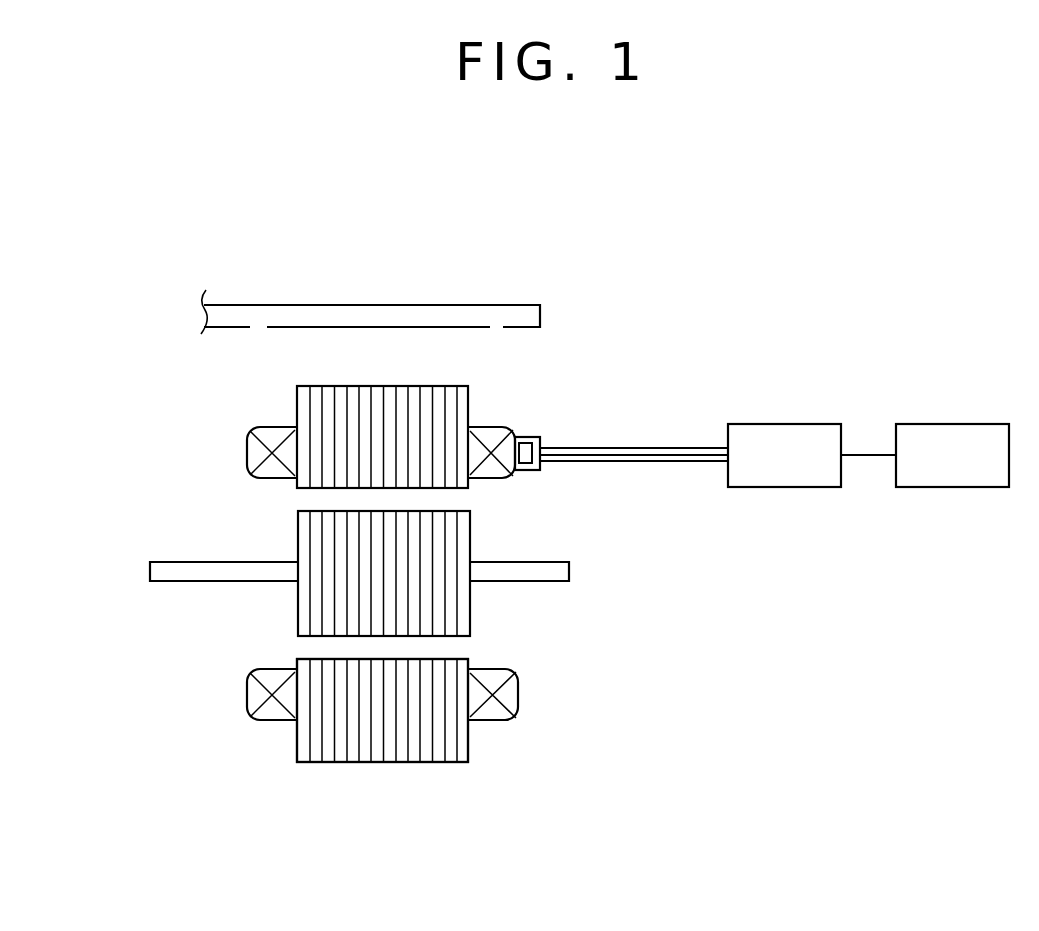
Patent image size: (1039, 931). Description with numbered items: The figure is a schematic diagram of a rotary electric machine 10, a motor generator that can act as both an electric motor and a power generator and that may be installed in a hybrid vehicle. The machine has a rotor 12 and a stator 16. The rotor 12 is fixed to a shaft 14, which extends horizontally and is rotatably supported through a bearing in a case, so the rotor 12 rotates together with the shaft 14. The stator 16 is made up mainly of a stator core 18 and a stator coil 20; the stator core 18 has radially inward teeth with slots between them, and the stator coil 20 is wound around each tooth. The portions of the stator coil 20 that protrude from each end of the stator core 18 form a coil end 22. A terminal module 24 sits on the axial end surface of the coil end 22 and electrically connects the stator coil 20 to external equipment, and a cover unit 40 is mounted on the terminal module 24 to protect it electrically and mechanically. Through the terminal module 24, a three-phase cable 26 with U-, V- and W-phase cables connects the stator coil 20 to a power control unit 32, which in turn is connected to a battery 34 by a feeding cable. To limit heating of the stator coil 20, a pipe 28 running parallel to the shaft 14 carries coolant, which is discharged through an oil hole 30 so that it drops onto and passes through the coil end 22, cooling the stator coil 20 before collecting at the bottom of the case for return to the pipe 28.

The rotary electric machine 10 is at (437, 234).
The rotor 12 is at (298, 597).
The shaft 14 is at (185, 562).
The stator 16 is at (382, 793).
The stator core 18 is at (297, 403).
The stator coil 20 is at (252, 450).
The coil end 22 is at (346, 614).
The terminal module 24 is at (528, 472).
The three-phase cable 26 is at (634, 448).
The pipe 28 is at (336, 300).
The oil hole 30 is at (262, 329).
The power control unit 32 is at (779, 437).
The battery 34 is at (948, 437).
The cover unit 40 is at (531, 437).